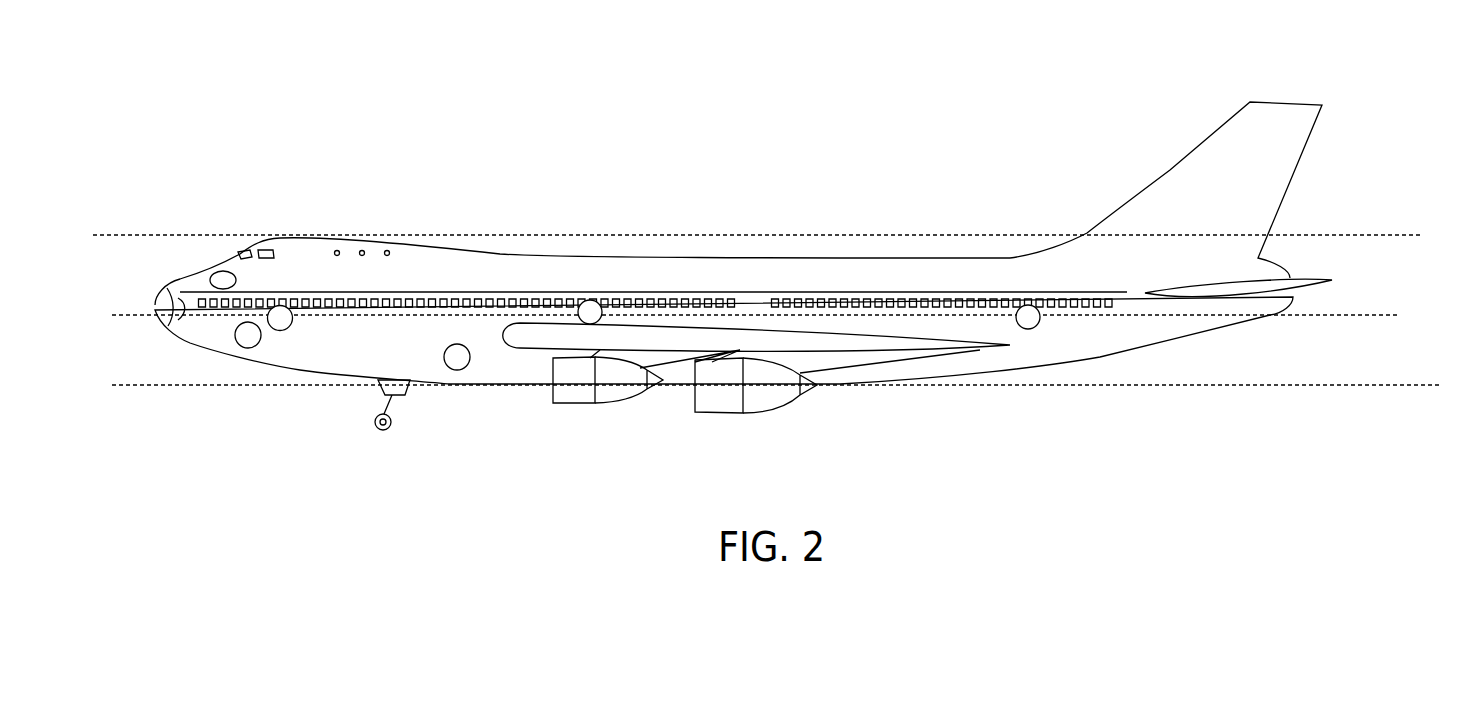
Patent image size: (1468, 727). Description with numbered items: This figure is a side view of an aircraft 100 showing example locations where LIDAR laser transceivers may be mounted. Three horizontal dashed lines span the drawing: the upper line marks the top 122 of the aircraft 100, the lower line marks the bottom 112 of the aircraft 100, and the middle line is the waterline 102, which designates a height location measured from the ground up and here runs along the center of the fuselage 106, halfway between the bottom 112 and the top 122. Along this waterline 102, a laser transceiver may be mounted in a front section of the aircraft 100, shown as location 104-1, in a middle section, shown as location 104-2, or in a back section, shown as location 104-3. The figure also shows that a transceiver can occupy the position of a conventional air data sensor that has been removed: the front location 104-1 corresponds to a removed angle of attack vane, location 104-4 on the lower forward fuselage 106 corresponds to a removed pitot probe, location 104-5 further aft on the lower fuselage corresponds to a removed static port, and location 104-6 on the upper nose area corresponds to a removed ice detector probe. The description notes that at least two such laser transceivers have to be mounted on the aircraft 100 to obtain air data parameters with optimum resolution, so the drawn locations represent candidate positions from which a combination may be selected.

The aircraft 100 is at (1025, 83).
The waterline 102 is at (1335, 316).
The laser transceiver in front section 104-1 is at (283, 331).
The laser transceiver in middle section 104-2 is at (590, 300).
The laser transceiver in back section 104-3 is at (1028, 305).
The laser transceiver at removed pitot probe location 104-4 is at (252, 348).
The laser transceiver at removed static port location 104-5 is at (457, 370).
The laser transceiver at removed ice detector probe location 104-6 is at (222, 271).
The fuselage 106 is at (427, 263).
The bottom of aircraft 112 is at (1105, 386).
The top of aircraft 122 is at (805, 235).